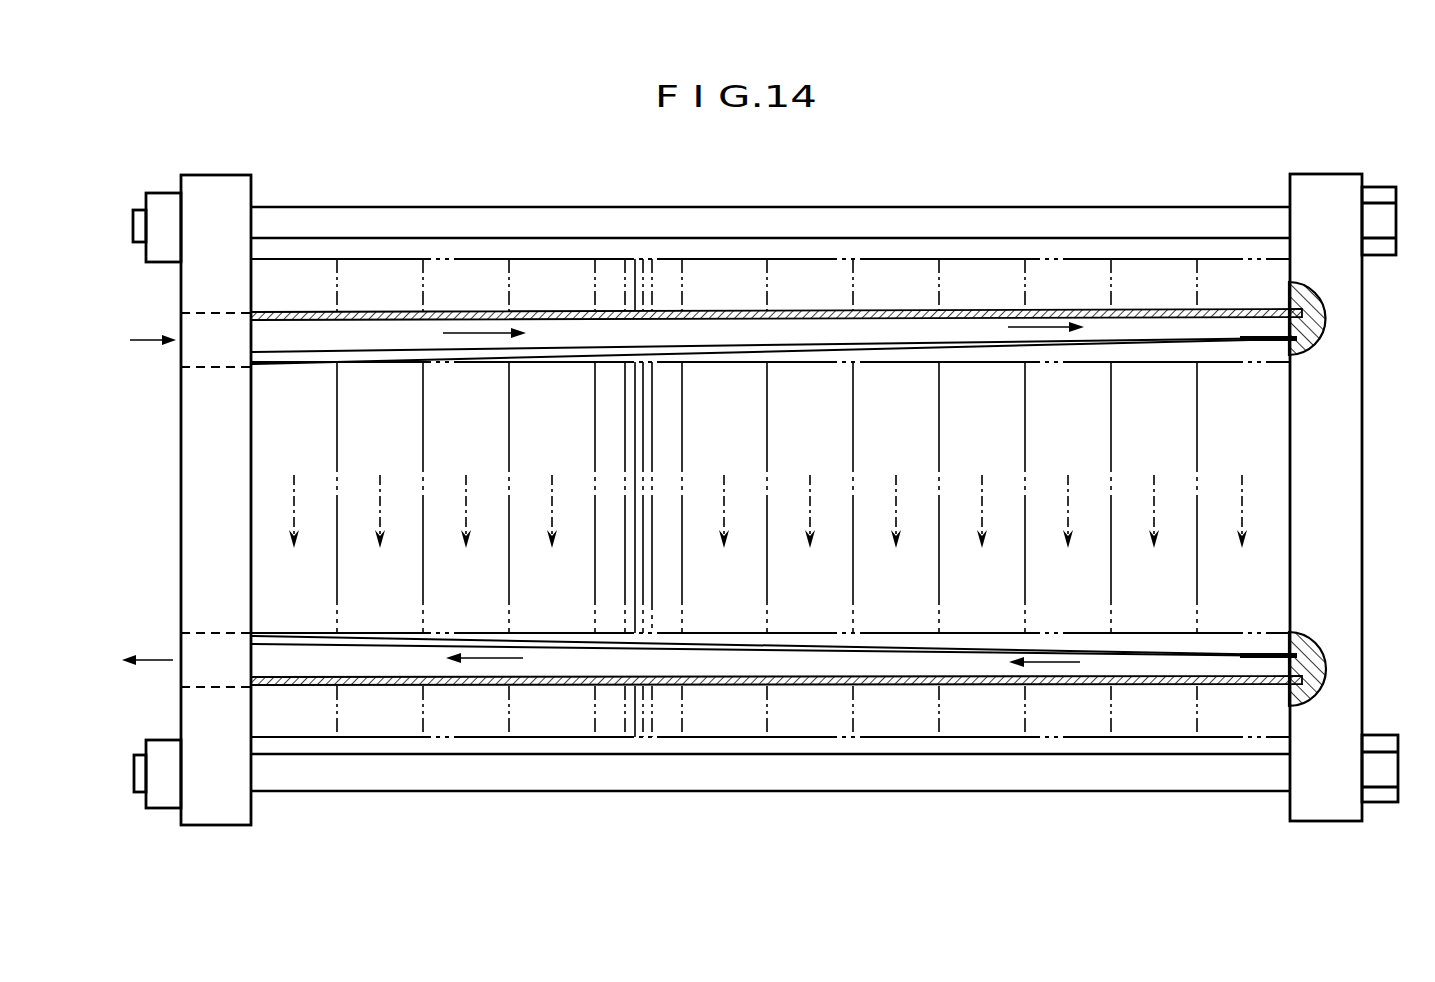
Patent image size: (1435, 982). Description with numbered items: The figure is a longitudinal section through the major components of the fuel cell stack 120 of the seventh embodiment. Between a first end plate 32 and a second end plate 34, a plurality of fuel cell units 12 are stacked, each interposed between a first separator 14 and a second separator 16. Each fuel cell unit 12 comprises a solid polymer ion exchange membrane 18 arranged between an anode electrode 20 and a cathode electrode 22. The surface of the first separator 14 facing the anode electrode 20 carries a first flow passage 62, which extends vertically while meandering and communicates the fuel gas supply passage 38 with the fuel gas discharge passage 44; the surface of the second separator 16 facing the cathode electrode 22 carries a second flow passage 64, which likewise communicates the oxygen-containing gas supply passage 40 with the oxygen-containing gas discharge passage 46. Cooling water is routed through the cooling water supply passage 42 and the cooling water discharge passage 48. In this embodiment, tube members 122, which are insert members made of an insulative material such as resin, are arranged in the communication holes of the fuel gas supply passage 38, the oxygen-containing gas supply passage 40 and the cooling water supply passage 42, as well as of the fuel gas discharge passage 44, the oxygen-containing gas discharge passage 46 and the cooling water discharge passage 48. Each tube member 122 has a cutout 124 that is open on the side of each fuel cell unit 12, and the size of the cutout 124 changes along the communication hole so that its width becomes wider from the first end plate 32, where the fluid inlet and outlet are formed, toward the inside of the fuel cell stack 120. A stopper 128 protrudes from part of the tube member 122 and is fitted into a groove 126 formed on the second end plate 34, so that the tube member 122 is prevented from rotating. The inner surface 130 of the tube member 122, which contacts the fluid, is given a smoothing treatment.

The fuel cell stack 120 is at (1097, 117).
The fuel cell unit 12 is at (641, 250).
The first separator 14 is at (610, 250).
The second separator 16 is at (669, 250).
The solid polymer ion exchange membrane 18 is at (648, 391).
The anode electrode 20 is at (628, 376).
The cathode electrode 22 is at (650, 442).
The first end plate 32 is at (218, 169).
The second end plate 34 is at (1323, 166).
The fuel gas supply passage 38 is at (471, 338).
The oxygen-containing gas supply passage 40 is at (471, 338).
The cooling water supply passage 42 is at (382, 342).
The fuel gas discharge passage 44 is at (471, 661).
The oxygen-containing gas discharge passage 46 is at (471, 661).
The cooling water discharge passage 48 is at (471, 661).
The first flow passage 62 is at (640, 458).
The second flow passage 64 is at (645, 570).
The tube member 122 is at (906, 300).
The cutout 124 is at (900, 345).
The groove 126 is at (1312, 283).
The stopper 128 is at (1300, 350).
The inner surface 130 is at (807, 330).